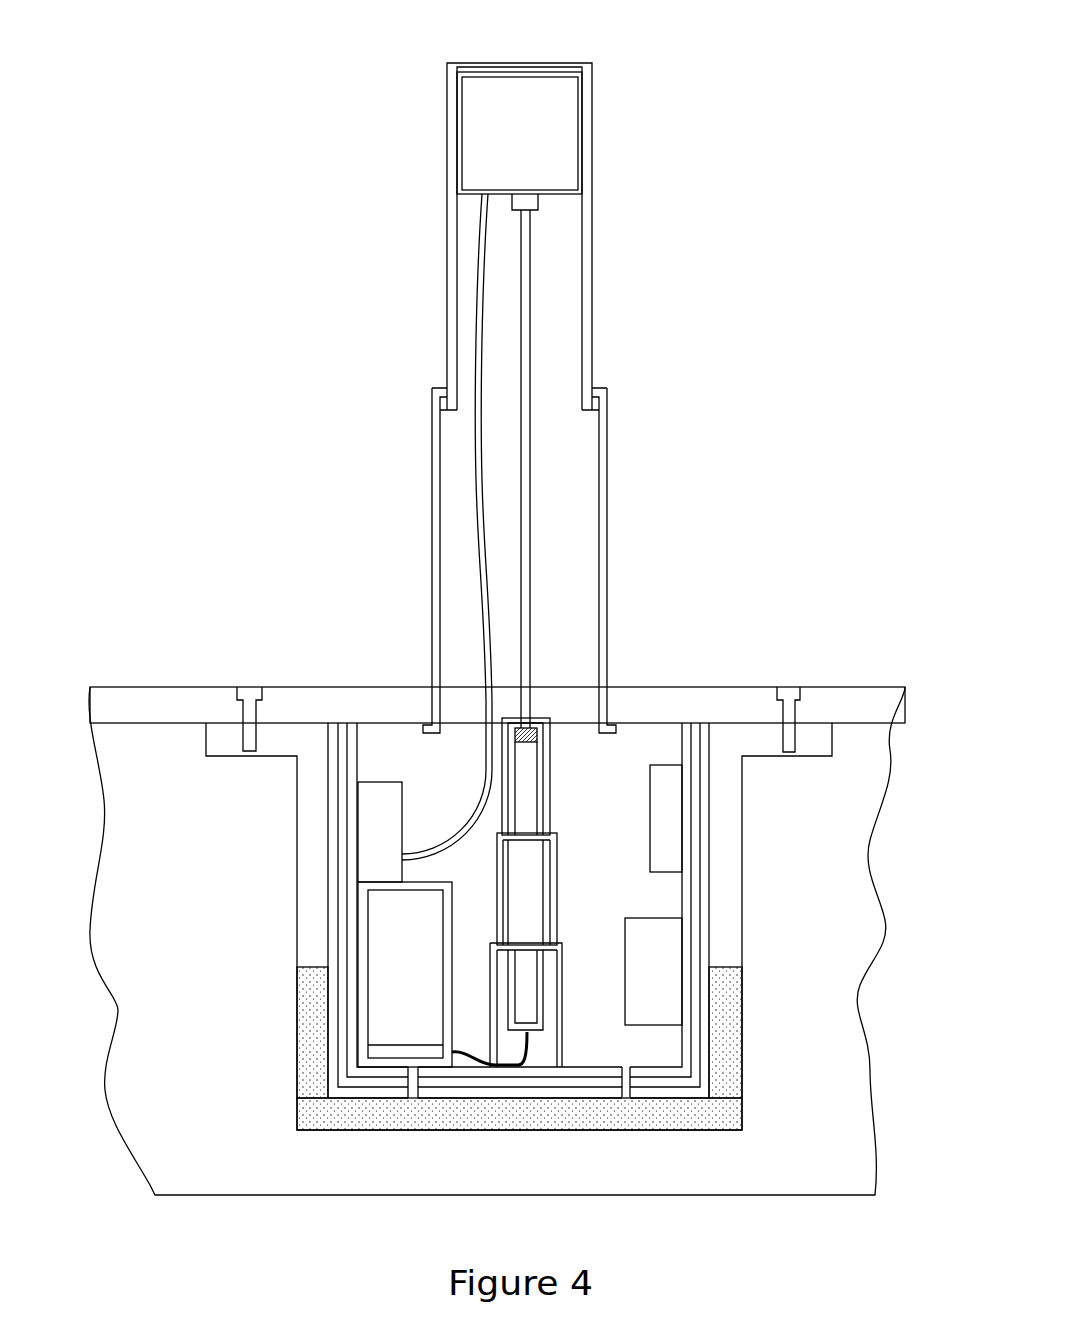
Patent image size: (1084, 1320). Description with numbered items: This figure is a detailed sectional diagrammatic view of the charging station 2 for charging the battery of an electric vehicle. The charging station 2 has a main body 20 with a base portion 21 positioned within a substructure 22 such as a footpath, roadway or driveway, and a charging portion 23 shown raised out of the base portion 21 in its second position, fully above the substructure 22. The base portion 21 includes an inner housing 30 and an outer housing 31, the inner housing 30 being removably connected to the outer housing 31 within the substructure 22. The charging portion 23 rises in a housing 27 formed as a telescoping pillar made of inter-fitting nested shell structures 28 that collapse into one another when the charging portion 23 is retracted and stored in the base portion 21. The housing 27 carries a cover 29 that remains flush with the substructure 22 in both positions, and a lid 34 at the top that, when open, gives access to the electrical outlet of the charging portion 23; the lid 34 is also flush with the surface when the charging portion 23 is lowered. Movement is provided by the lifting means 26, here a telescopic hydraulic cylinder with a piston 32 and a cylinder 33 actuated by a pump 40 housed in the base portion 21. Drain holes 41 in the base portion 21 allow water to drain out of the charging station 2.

The charging station 2 is at (629, 246).
The main body 20 is at (617, 780).
The base portion 21 is at (712, 744).
The substructure 22 is at (191, 838).
The charging portion 23 is at (553, 120).
The lifting means 26 is at (553, 888).
The housing 27 is at (606, 458).
The inter-fitting nested shell structures 28 is at (592, 336).
The cover 29 is at (348, 687).
The inner housing 30 is at (673, 1075).
The outer housing 31 is at (703, 1055).
The piston 32 is at (522, 477).
The cylinder 33 is at (496, 869).
The lid 34 is at (518, 63).
The pump 40 is at (388, 1018).
The drain holes 41 is at (413, 1098).